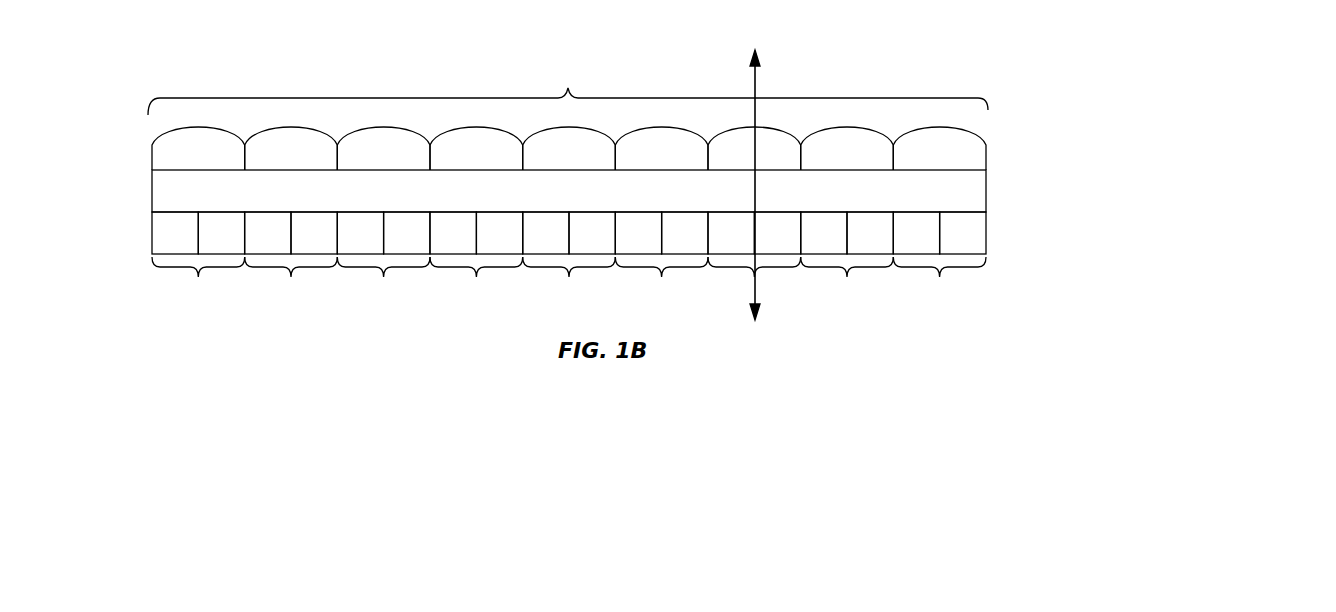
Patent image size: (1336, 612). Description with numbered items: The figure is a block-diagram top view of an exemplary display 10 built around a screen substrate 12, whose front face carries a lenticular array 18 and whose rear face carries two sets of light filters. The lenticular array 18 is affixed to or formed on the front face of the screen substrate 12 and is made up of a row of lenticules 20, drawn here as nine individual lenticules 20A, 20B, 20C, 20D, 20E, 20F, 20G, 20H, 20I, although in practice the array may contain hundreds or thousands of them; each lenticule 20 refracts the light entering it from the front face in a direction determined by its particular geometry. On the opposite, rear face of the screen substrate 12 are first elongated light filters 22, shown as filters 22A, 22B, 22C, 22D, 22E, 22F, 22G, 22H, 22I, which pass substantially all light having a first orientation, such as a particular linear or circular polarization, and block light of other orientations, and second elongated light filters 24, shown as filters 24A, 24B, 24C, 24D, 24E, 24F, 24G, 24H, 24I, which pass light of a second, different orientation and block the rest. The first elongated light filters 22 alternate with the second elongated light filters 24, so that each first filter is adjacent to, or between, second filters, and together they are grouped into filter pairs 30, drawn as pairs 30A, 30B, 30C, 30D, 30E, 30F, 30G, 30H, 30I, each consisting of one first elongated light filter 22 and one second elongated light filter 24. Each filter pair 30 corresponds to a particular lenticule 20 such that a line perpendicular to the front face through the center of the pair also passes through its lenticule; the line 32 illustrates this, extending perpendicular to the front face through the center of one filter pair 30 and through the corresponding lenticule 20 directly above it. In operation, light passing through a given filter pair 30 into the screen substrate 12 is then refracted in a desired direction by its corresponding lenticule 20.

The display 10 is at (945, 62).
The screen substrate 12 is at (555, 198).
The lenticular array 18 is at (568, 89).
The lenticules 20 is at (671, 148).
The lenticule 20A is at (183, 159).
The lenticule 20B is at (276, 159).
The lenticule 20C is at (399, 159).
The lenticule 20D is at (461, 159).
The lenticule 20E is at (554, 159).
The lenticule 20F is at (677, 159).
The lenticule 20G is at (760, 159).
The lenticule 20H is at (832, 159).
The lenticule 20I is at (927, 159).
The first elongated light filters 22 is at (696, 209).
The first elongated light filter 22A is at (161, 243).
The first elongated light filter 22B is at (282, 243).
The first elongated light filter 22C is at (346, 243).
The first elongated light filter 22D is at (439, 243).
The first elongated light filter 22E is at (560, 243).
The first elongated light filter 22F is at (624, 243).
The first elongated light filter 22G is at (717, 243).
The first elongated light filter 22H is at (838, 243).
The first elongated light filter 22I is at (904, 243).
The second elongated light filters 24 is at (731, 232).
The second elongated light filter 24A is at (236, 243).
The second elongated light filter 24B is at (300, 243).
The second elongated light filter 24C is at (421, 243).
The second elongated light filter 24D is at (514, 243).
The second elongated light filter 24E is at (578, 243).
The second elongated light filter 24F is at (699, 243).
The second elongated light filter 24G is at (792, 243).
The second elongated light filter 24H is at (856, 243).
The second elongated light filter 24I is at (975, 243).
The filter pairs 30 is at (674, 277).
The filter pair 30A is at (198, 279).
The filter pair 30B is at (291, 279).
The filter pair 30C is at (383, 279).
The filter pair 30D is at (476, 279).
The filter pair 30E is at (569, 279).
The filter pair 30F is at (661, 279).
The filter pair 30G is at (754, 279).
The filter pair 30H is at (847, 279).
The filter pair 30I is at (939, 279).
The line 32 is at (757, 83).